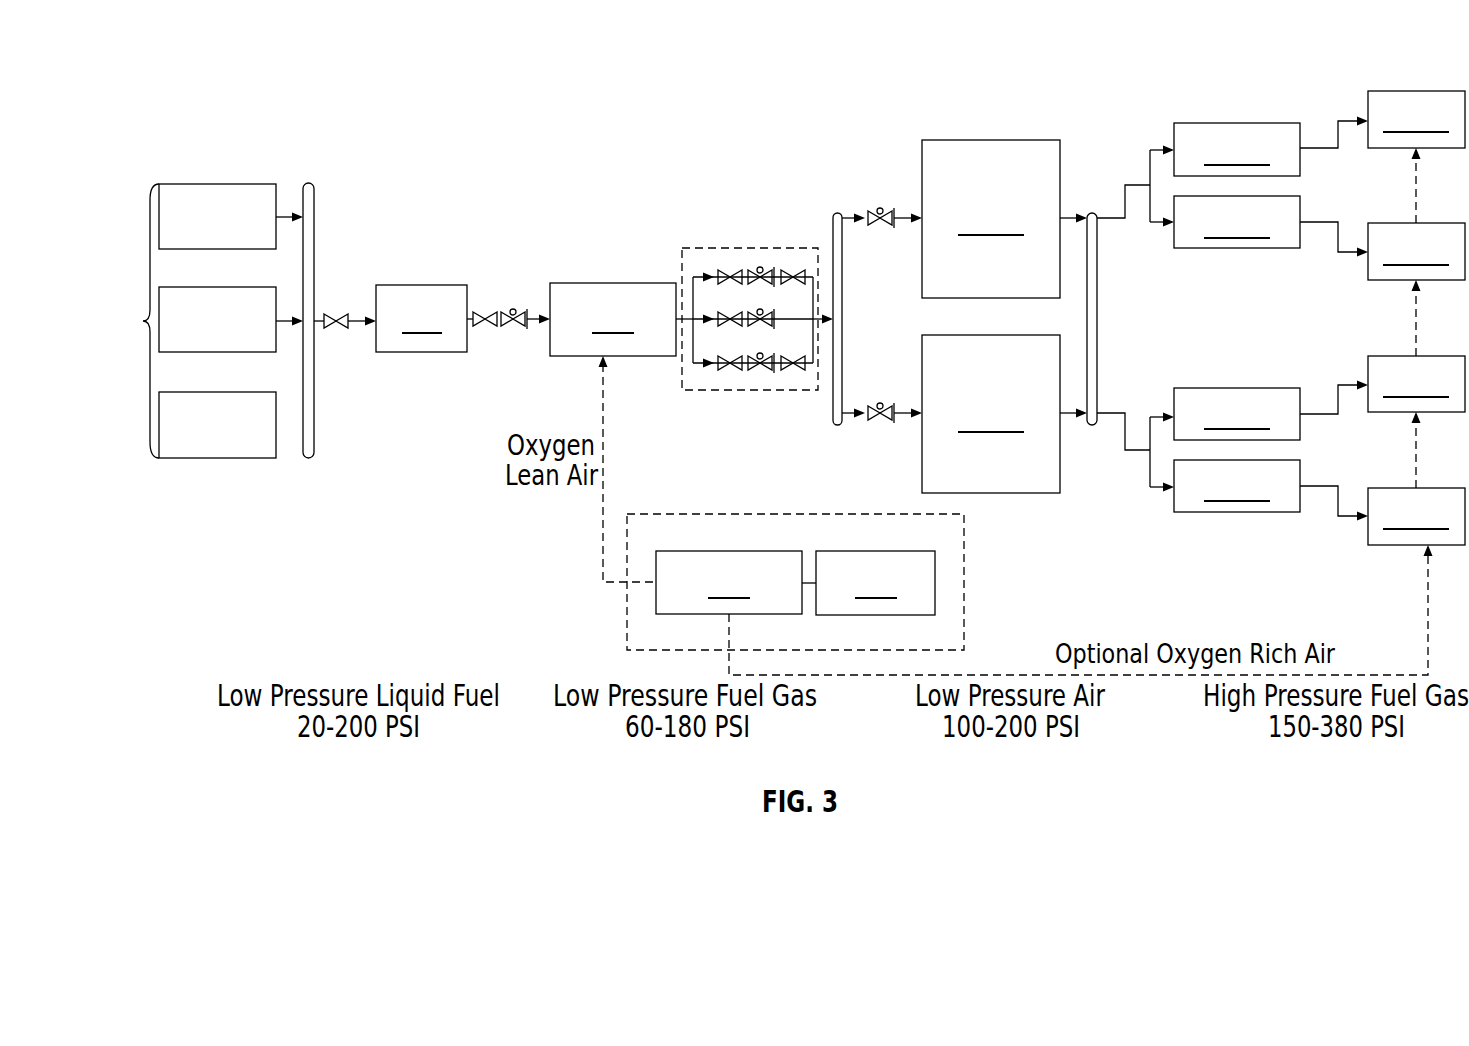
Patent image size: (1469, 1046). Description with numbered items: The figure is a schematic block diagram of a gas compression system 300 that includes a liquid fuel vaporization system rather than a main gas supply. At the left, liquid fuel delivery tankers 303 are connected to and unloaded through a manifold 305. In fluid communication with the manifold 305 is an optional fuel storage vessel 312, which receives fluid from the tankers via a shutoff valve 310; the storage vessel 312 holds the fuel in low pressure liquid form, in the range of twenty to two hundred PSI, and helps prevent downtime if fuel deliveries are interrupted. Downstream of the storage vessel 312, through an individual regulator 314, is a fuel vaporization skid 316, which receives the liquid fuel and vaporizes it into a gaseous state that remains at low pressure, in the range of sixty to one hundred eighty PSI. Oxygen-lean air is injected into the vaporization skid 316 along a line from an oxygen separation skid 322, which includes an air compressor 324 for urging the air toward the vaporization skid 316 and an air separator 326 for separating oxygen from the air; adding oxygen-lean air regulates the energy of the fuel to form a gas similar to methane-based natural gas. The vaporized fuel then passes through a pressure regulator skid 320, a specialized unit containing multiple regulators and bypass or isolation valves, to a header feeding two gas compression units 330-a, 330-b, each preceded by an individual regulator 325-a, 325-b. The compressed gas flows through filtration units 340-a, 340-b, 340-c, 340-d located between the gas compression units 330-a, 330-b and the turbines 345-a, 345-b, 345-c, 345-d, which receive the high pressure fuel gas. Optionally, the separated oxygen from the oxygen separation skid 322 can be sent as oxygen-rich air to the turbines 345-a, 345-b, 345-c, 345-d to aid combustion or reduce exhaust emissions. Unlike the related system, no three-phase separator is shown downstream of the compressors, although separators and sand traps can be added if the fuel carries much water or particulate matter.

The gas compression system 300 is at (208, 40).
The liquid fuel delivery tankers 303 is at (188, 321).
The manifold 305 is at (316, 212).
The shutoff valve 310 is at (338, 325).
The fuel storage vessel 312 is at (421, 318).
The regulator 314 is at (505, 326).
The fuel vaporization skid 316 is at (613, 319).
The pressure regulator skid 320 is at (723, 229).
The oxygen separation skid 322 is at (795, 558).
The air compressor 324 is at (729, 582).
The regulator 325-a is at (870, 226).
The regulator 325-b is at (870, 420).
The air separator 326 is at (875, 583).
The gas compression unit 330-a is at (991, 219).
The gas compression unit 330-b is at (991, 414).
The filtration unit 340-a is at (1237, 149).
The filtration unit 340-b is at (1237, 222).
The filtration unit 340-c is at (1237, 414).
The filtration unit 340-d is at (1237, 486).
The turbine 345-a is at (1416, 119).
The turbine 345-b is at (1416, 251).
The turbine 345-c is at (1416, 384).
The turbine 345-d is at (1416, 516).